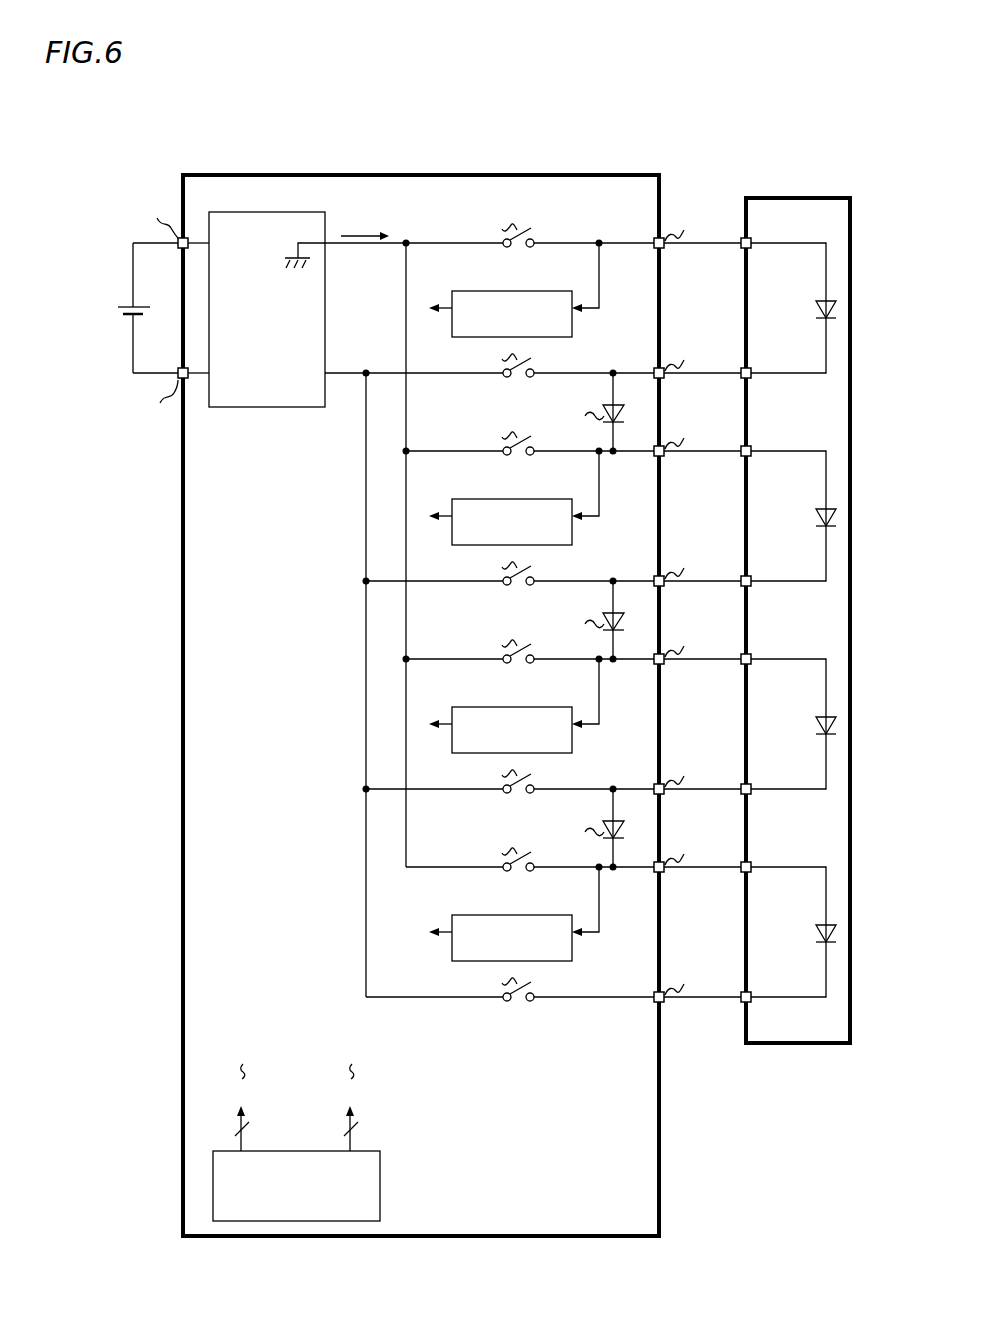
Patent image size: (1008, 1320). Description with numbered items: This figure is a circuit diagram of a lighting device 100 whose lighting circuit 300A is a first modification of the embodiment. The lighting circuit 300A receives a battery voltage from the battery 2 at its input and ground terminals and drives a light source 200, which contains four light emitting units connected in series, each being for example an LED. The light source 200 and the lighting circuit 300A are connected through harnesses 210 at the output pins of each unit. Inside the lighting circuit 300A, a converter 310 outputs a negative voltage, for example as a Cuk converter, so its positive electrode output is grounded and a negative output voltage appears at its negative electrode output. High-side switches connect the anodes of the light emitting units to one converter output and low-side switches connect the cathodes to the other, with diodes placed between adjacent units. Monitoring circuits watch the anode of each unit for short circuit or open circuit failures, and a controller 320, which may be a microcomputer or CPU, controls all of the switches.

The battery 2 is at (113, 313).
The lighting device 100 is at (722, 121).
The light source 200 is at (802, 180).
The harness 210 is at (742, 1027).
The lighting circuit 300A is at (447, 158).
The converter 310 is at (245, 210).
The controller 320 is at (381, 1178).